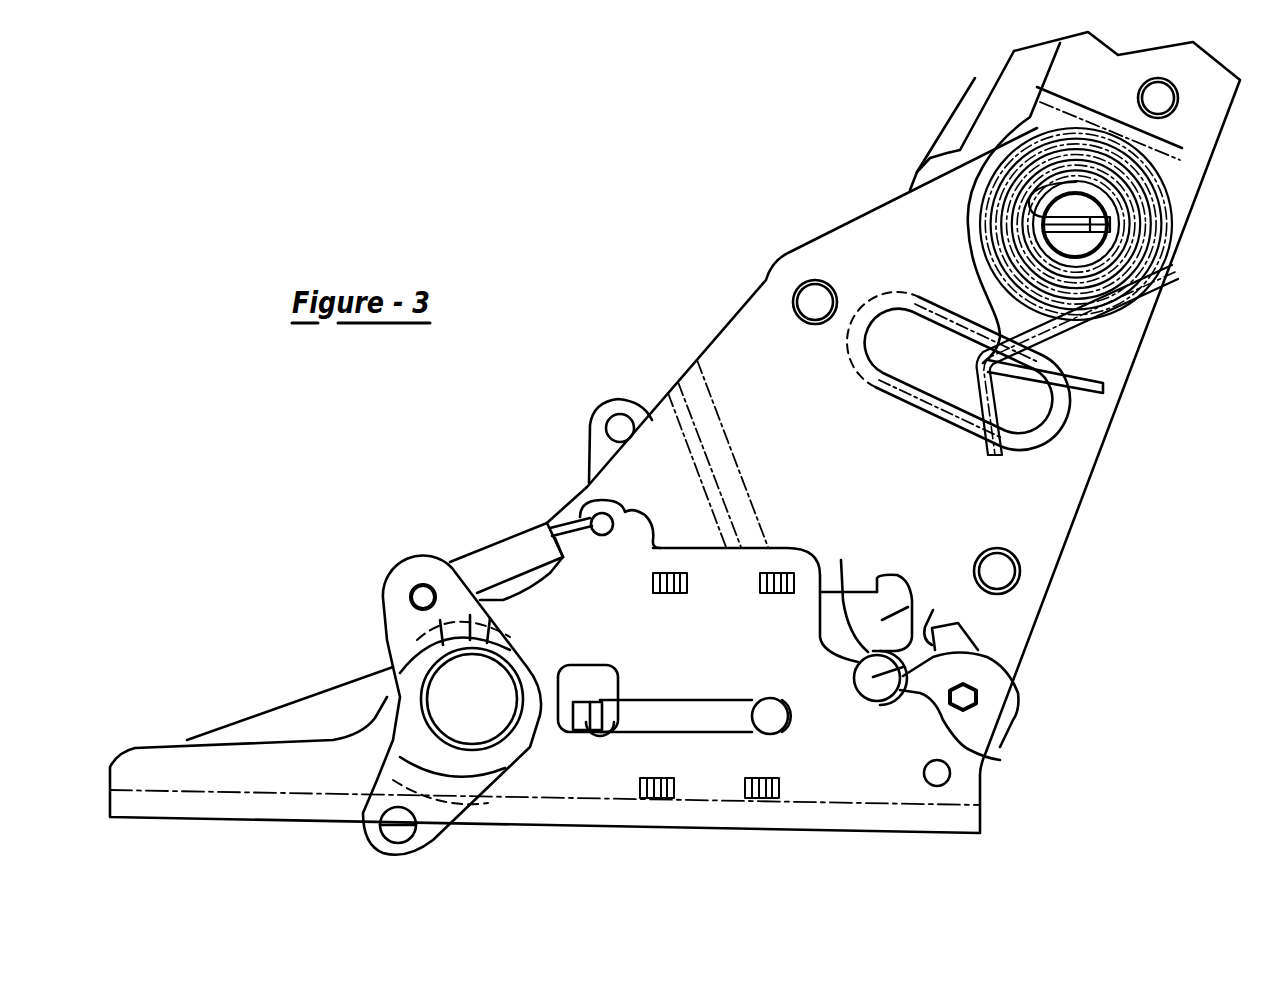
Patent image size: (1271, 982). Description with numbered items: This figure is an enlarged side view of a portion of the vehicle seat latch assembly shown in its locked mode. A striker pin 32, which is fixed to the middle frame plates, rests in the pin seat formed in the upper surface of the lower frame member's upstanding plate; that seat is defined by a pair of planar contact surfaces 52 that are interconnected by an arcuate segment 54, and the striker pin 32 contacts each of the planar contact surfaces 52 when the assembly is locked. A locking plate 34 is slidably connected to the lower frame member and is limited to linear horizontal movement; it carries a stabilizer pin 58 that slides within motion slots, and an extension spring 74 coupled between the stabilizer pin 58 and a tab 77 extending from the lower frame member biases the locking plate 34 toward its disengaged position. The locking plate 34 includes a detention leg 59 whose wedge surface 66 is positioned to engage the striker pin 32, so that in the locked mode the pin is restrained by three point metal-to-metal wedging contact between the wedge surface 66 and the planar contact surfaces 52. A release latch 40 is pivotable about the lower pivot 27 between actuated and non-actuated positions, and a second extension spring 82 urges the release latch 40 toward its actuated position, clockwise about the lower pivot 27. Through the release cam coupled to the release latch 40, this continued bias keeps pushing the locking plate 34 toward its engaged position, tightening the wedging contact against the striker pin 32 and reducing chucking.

The lower pivot 27 is at (443, 708).
The striker pin 32 is at (1016, 673).
The locking plate 34 is at (880, 575).
The release latch 40 is at (387, 620).
The planar contact surfaces 52 is at (853, 690).
The arcuate segment 54 is at (877, 706).
The stabilizer pin 58 is at (775, 720).
The detention leg 59 is at (921, 608).
The wedge surface 66 is at (841, 560).
The extension spring 74 is at (680, 713).
The tab 77 is at (587, 710).
The extension spring 82 is at (485, 543).